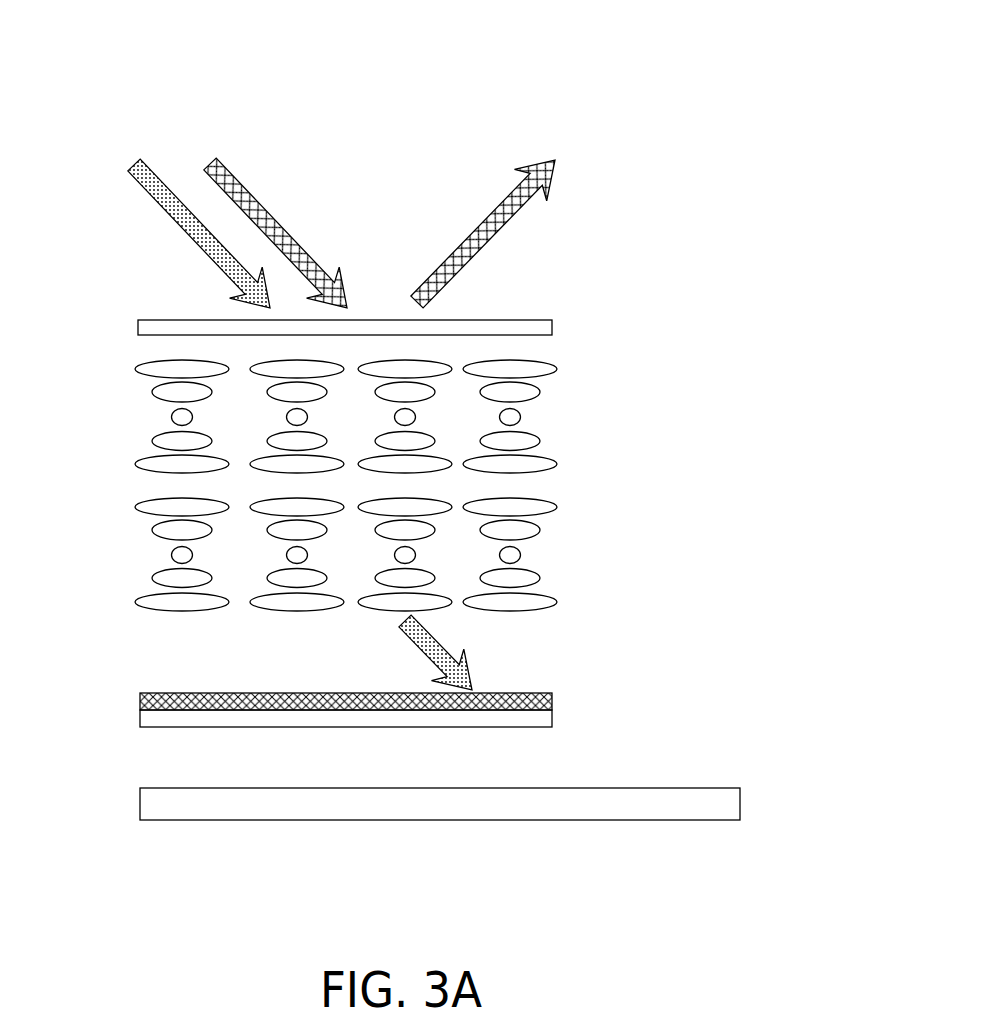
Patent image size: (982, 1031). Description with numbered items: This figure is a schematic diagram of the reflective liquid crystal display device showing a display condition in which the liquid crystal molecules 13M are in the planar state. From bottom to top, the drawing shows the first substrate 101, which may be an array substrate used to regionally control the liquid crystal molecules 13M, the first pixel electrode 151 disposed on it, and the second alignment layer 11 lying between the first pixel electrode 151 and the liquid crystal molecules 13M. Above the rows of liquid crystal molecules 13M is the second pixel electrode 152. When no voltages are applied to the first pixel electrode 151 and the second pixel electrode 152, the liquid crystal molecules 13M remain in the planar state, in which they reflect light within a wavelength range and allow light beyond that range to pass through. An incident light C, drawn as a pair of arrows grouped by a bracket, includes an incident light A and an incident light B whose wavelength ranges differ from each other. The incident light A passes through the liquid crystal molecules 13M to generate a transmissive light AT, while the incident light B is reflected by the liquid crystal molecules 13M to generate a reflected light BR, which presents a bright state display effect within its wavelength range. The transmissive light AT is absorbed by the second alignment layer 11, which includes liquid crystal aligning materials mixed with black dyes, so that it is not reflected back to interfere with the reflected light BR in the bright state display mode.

The incident light C is at (232, 72).
The incident light A is at (132, 162).
The incident light B is at (208, 162).
The reflected light BR is at (465, 238).
The second pixel electrode 152 is at (552, 327).
The liquid crystal molecules 13M is at (557, 464).
The transmissive light AT is at (415, 657).
The second alignment layer 11 is at (140, 697).
The first pixel electrode 151 is at (552, 718).
The first substrate 101 is at (740, 803).